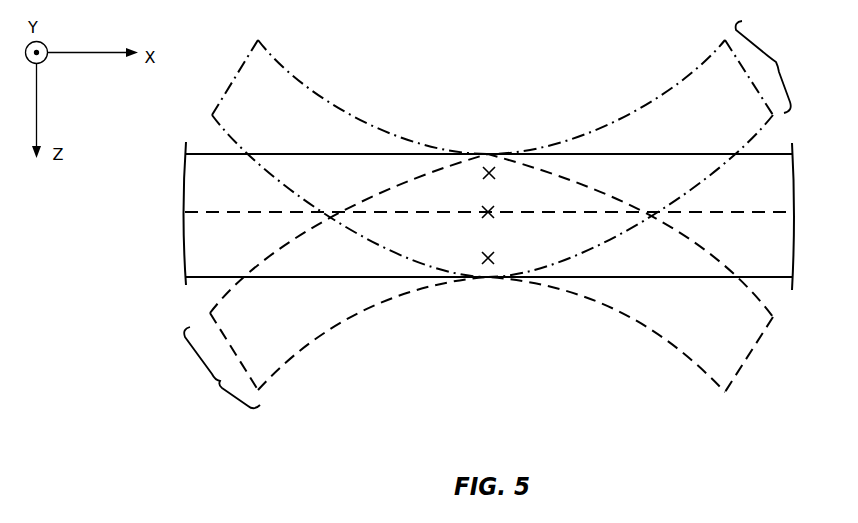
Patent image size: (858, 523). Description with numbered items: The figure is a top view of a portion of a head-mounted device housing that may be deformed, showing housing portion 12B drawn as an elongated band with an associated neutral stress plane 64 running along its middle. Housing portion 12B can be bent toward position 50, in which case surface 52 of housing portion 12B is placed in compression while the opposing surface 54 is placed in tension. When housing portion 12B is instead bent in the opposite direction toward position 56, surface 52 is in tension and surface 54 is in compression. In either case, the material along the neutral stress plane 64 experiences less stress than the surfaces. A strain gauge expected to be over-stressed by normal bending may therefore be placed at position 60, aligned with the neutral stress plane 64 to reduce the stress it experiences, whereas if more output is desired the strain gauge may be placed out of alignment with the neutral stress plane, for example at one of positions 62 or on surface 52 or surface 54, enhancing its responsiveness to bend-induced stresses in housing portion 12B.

The housing portion 12B is at (772, 278).
The position 50 is at (771, 67).
The surface 52 is at (643, 110).
The opposing surface 54 is at (716, 176).
The position 56 is at (222, 367).
The position 60 is at (486, 212).
The positions 62 is at (488, 168).
The neutral stress plane 64 is at (218, 213).